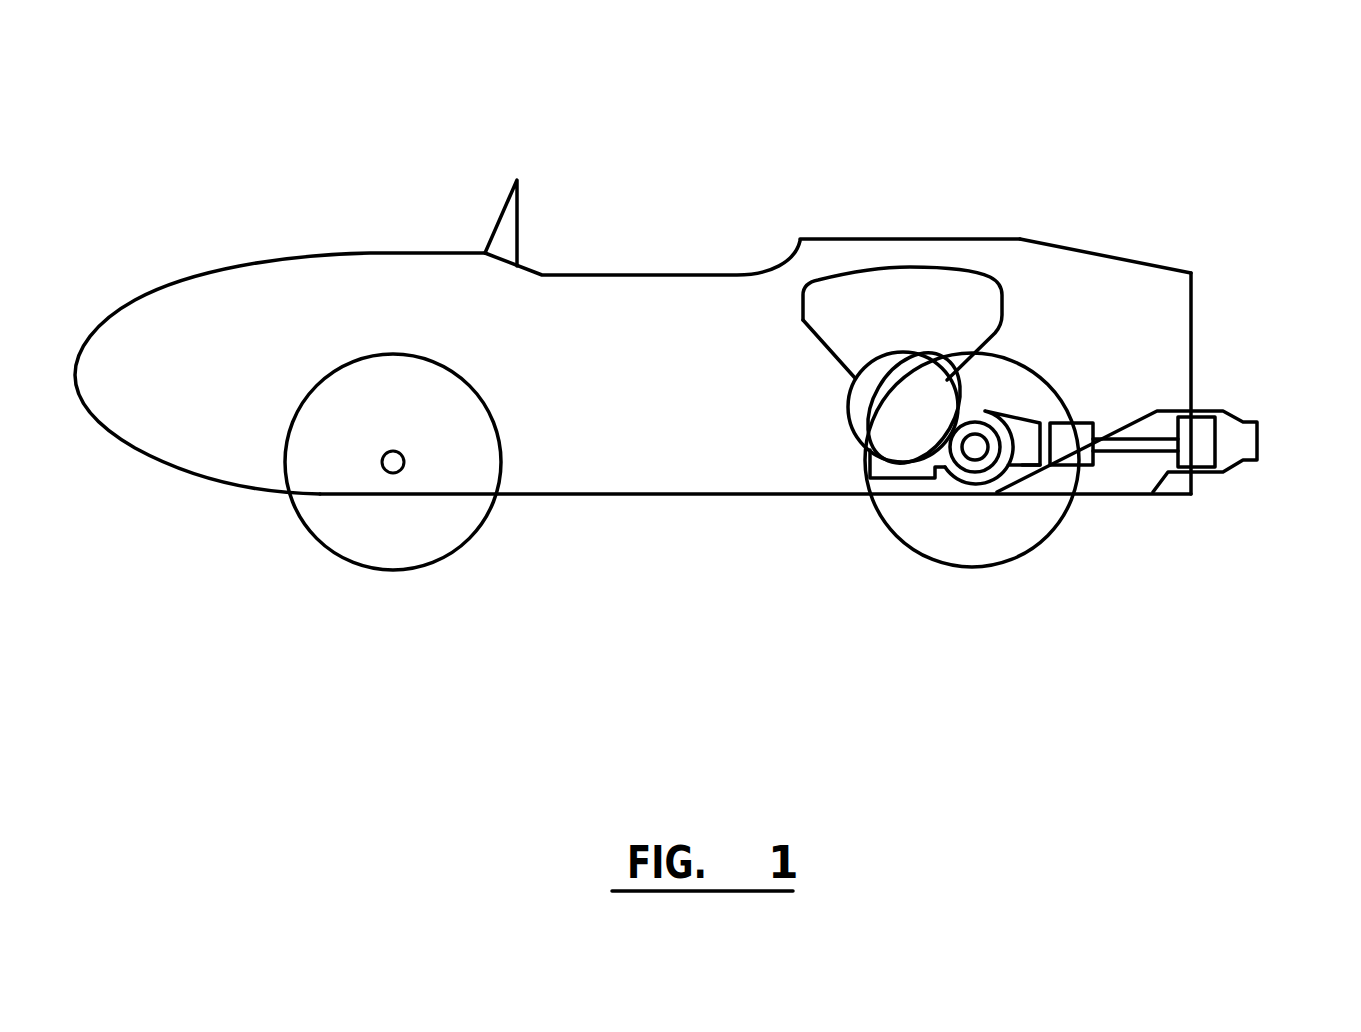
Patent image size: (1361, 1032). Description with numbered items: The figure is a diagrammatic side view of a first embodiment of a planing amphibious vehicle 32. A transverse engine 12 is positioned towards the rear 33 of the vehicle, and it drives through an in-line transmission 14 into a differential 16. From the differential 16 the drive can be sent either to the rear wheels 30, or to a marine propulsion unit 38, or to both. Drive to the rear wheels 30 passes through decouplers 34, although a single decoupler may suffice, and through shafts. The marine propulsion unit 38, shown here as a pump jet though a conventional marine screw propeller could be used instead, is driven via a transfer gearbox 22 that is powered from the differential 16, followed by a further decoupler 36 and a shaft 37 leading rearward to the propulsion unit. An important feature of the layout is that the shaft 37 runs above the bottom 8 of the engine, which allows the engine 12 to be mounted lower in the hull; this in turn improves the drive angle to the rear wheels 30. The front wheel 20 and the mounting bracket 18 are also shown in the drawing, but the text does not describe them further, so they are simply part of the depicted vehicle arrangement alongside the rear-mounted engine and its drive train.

The bottom of the engine 8 is at (866, 452).
The transverse engine 12 is at (835, 317).
The in-line transmission 14 is at (862, 407).
The differential 16 is at (978, 466).
The mounting bracket 18 is at (962, 470).
The front wheel 20 is at (352, 522).
The transfer gearbox 22 is at (1023, 468).
The rear wheels 30 is at (977, 557).
The planing amphibious vehicle 32 is at (652, 505).
The rear of the vehicle 33 is at (1022, 238).
The decouplers 34 is at (975, 450).
The further decoupler 36 is at (1090, 465).
The shaft 37 is at (1133, 443).
The marine propulsion unit 38 is at (1145, 465).